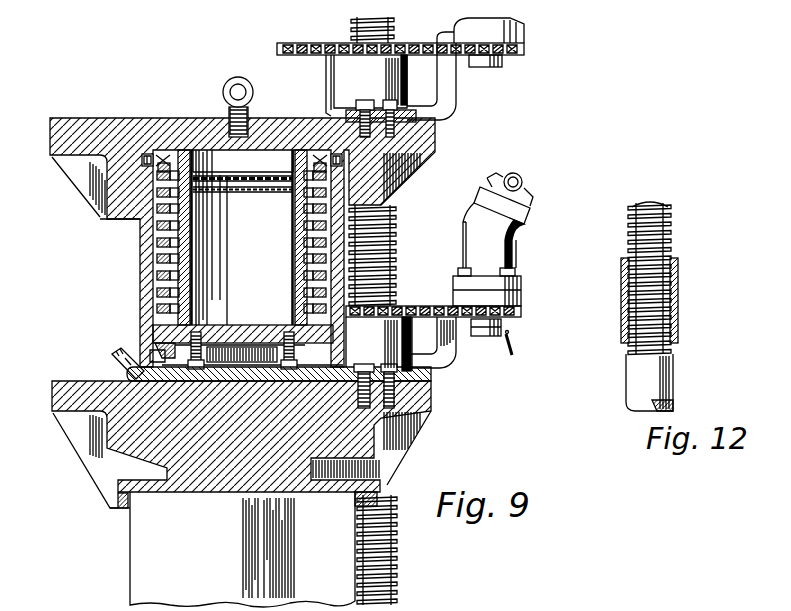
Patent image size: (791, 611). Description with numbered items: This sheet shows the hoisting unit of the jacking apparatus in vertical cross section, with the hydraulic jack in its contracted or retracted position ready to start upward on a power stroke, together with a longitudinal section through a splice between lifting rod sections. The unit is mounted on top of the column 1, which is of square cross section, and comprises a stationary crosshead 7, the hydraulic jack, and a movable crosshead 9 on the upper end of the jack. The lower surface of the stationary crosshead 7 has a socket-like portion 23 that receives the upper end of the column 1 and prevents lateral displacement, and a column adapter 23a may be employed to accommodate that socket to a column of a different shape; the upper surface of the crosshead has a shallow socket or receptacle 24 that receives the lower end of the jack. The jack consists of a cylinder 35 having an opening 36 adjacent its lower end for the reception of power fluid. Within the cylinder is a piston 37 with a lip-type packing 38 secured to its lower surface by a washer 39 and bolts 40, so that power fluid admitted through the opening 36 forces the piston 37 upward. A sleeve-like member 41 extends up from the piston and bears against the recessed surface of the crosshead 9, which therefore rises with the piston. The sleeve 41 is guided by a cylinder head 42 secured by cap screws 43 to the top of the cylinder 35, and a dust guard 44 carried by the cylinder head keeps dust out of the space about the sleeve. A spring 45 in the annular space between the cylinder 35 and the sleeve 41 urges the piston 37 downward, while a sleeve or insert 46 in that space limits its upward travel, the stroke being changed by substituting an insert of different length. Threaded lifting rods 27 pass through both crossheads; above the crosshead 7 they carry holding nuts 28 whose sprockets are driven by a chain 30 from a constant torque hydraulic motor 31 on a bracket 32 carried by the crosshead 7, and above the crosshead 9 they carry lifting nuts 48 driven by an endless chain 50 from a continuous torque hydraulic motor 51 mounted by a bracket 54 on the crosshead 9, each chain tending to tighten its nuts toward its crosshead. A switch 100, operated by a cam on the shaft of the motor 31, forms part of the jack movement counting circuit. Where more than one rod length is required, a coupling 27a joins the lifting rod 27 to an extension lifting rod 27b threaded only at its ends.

In FIG. 9, the column 1 is at (133, 576).
In FIG. 9, the stationary crosshead 7 is at (374, 430).
In FIG. 9, the movable crosshead 9 is at (92, 118).
In FIG. 9, the socket-like portion 23 is at (128, 497).
In FIG. 9, the column adapter 23a is at (122, 512).
In FIG. 9, the socket or receptacle 24 is at (112, 380).
In FIG. 9, the lifting rod 27 is at (352, 28).
In FIG. 12, the lifting rod 27 is at (672, 228).
In FIG. 12, the coupling 27a is at (679, 278).
In FIG. 12, the extension lifting rod 27b is at (674, 378).
In FIG. 9, the holding nut 28 is at (411, 322).
In FIG. 9, the chain 30 is at (424, 307).
In FIG. 9, the constant torque hydraulic motor 31 is at (508, 254).
In FIG. 9, the bracket 32 is at (457, 349).
In FIG. 9, the cylinder 35 is at (146, 264).
In FIG. 9, the opening 36 is at (125, 370).
In FIG. 9, the piston 37 is at (264, 334).
In FIG. 9, the lip-type packing 38 is at (158, 342).
In FIG. 9, the washer 39 is at (283, 348).
In FIG. 9, the bolts 40 is at (152, 355).
In FIG. 9, the sleeve-like member 41 is at (253, 188).
In FIG. 9, the cylinder head 42 is at (300, 171).
In FIG. 9, the cap screws 43 is at (148, 160).
In FIG. 9, the dust guard 44 is at (172, 170).
In FIG. 9, the spring 45 is at (309, 283).
In FIG. 9, the sleeve or insert 46 is at (306, 255).
In FIG. 9, the lifting nut 48 is at (345, 79).
In FIG. 9, the endless chain 50 is at (292, 44).
In FIG. 9, the continuous torque hydraulic motor 51 is at (526, 21).
In FIG. 9, the bracket 54 is at (458, 93).
In FIG. 9, the switch 100 is at (514, 351).